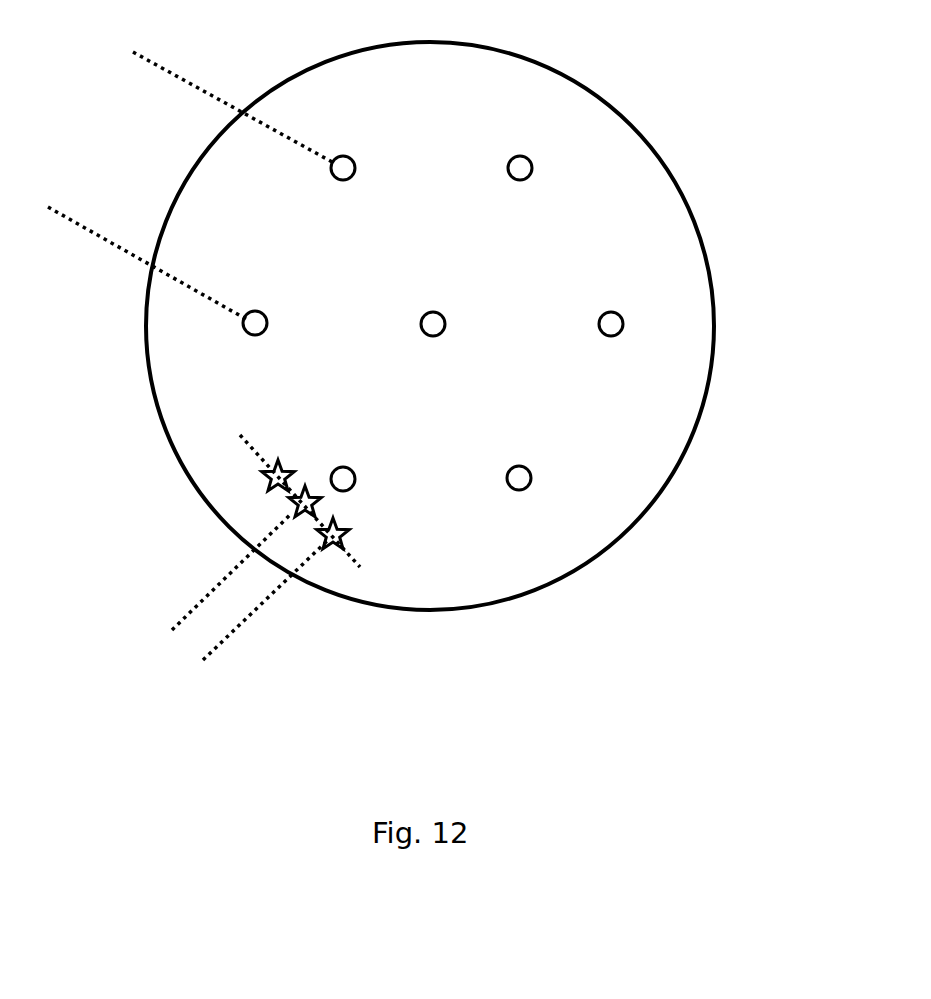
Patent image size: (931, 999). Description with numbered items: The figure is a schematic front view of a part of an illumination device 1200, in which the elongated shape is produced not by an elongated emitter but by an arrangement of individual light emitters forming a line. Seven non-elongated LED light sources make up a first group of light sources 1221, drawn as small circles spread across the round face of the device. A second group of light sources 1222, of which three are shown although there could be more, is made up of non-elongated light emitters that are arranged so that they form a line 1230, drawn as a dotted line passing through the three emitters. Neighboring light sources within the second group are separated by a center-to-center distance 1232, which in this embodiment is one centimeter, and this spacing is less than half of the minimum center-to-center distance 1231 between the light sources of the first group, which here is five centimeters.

The illumination device 1200 is at (688, 103).
The first group of light sources 1221 is at (445, 330).
The second group of light sources 1222 is at (326, 537).
The line 1230 is at (252, 452).
The minimum center-to-center distance 1231 is at (155, 70).
The center-to-center distance 1232 is at (208, 647).